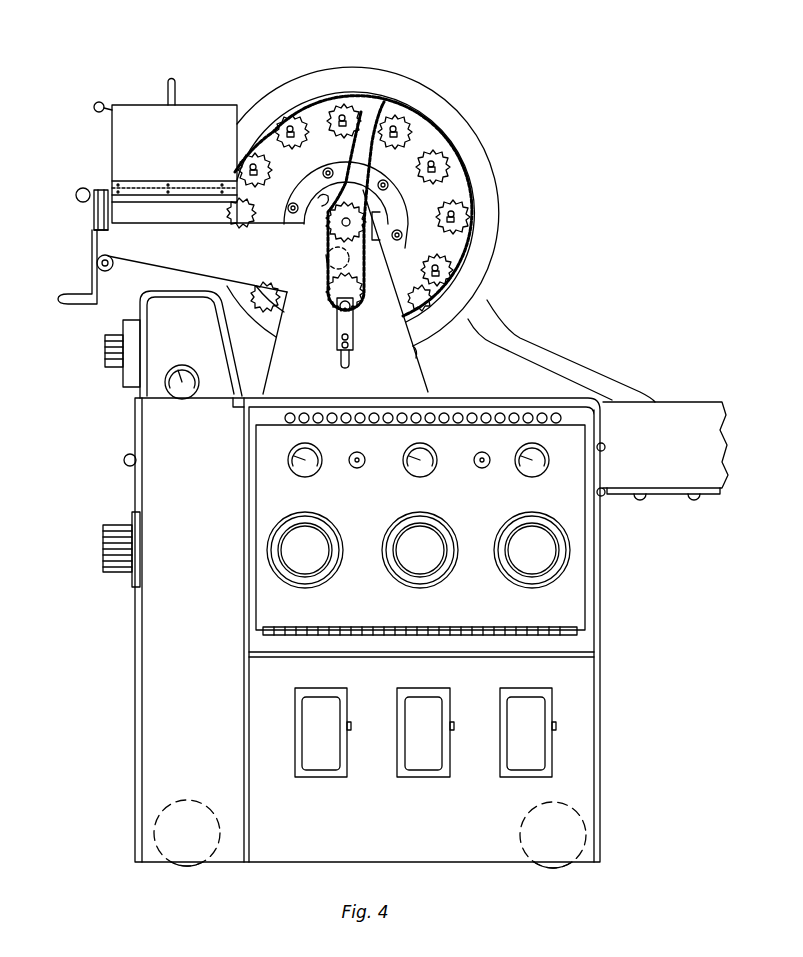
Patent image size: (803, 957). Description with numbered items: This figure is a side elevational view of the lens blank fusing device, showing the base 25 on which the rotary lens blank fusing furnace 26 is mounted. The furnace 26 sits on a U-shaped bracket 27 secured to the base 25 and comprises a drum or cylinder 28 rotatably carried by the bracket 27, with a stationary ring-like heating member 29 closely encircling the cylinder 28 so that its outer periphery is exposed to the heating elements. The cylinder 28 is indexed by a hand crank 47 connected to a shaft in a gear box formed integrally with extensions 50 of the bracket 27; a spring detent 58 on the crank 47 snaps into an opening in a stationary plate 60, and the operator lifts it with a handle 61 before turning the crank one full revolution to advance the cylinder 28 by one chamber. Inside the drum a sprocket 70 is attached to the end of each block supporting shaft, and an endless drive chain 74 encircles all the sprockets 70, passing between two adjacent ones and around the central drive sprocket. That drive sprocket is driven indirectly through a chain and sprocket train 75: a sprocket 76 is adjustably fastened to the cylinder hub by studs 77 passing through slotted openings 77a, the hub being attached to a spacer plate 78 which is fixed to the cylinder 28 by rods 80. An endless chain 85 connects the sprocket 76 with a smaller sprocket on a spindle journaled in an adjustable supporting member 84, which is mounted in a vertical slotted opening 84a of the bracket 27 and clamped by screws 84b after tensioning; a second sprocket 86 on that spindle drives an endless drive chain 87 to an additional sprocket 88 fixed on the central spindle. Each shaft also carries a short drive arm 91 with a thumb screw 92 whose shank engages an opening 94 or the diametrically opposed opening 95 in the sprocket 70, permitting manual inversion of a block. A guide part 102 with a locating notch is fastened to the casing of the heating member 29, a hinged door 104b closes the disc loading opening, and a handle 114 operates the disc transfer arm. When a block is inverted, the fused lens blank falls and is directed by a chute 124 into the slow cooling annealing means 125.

The base 25 is at (152, 655).
The rotary lens blank fusing furnace 26 is at (462, 66).
The U-shaped bracket 27 is at (428, 384).
The drum or cylinder 28 is at (455, 190).
The stationary ring-like heating member 29 is at (467, 128).
The hand crank 47 is at (88, 252).
The extensions 50 is at (135, 258).
The spring detent 58 is at (93, 195).
The stationary plate 60 is at (104, 232).
The handle 61 is at (76, 196).
The sprocket 70 is at (284, 146).
The endless drive chain 74 is at (374, 140).
The chain and sprocket train 75 is at (375, 281).
The sprocket 76 is at (372, 214).
The studs 77 is at (337, 230).
The slotted openings 77a is at (336, 224).
The spacer plate 78 is at (292, 198).
The rods 80 is at (386, 218).
The adjustable supporting member 84 is at (355, 330).
The vertical slotted opening 84a is at (350, 365).
The screws 84b is at (352, 340).
The endless chain 85 is at (354, 166).
The second sprocket 86 is at (328, 312).
The endless drive chain 87 is at (326, 264).
The additional sprocket 88 is at (330, 230).
The drive arm 91 is at (340, 102).
The thumb screw 92 is at (341, 115).
The opening 94 is at (462, 228).
The opening 95 is at (437, 262).
The guide part 102 is at (488, 297).
The hinged door 104b is at (115, 148).
The handle 114 is at (97, 264).
The chute 124 is at (565, 368).
The annealing means 125 is at (695, 402).